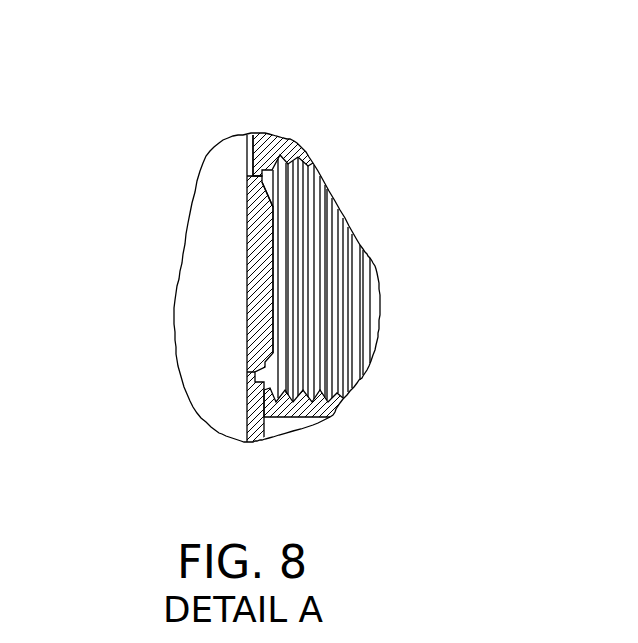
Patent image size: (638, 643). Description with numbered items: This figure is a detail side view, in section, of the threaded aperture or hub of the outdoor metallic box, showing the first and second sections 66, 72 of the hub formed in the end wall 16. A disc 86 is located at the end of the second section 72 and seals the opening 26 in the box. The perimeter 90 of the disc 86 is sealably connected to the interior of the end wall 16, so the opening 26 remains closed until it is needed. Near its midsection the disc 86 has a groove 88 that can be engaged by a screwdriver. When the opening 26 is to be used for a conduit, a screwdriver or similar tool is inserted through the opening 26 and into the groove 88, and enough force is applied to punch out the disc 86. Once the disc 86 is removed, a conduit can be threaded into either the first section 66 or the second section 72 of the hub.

The end wall 16 is at (267, 133).
The opening 26 is at (365, 260).
The first section 66 is at (363, 330).
The second section 72 is at (297, 365).
The disc 86 is at (247, 302).
The groove 88 is at (268, 272).
The perimeter 90 is at (247, 178).